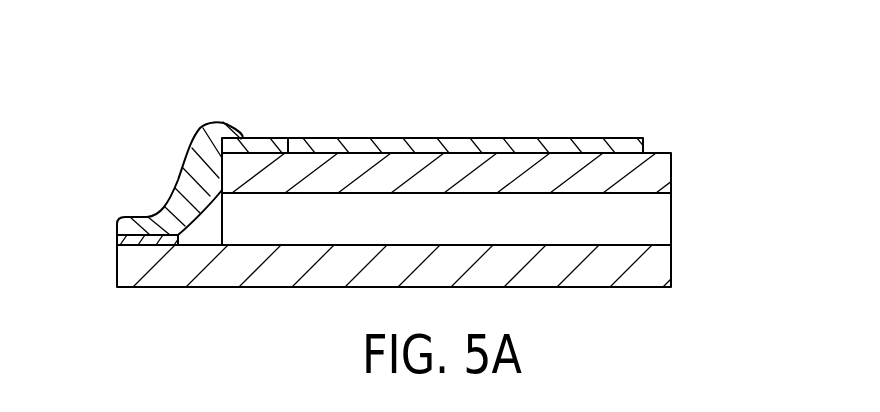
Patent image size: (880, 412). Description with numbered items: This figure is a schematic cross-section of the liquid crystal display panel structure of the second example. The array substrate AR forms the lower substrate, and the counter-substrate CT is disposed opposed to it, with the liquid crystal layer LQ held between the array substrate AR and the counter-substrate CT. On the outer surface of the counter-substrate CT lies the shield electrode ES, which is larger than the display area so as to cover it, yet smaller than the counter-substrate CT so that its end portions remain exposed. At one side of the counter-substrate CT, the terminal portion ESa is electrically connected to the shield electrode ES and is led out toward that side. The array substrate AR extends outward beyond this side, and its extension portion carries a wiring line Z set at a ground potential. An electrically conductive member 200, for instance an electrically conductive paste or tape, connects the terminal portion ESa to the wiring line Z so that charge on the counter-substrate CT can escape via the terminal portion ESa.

The array substrate AR is at (658, 272).
The liquid crystal layer LQ is at (658, 220).
The counter-substrate CT is at (658, 168).
The shield electrode ES is at (460, 142).
The terminal portion ESa is at (262, 142).
The wiring line Z is at (125, 240).
The electrically conductive member 200 is at (192, 183).